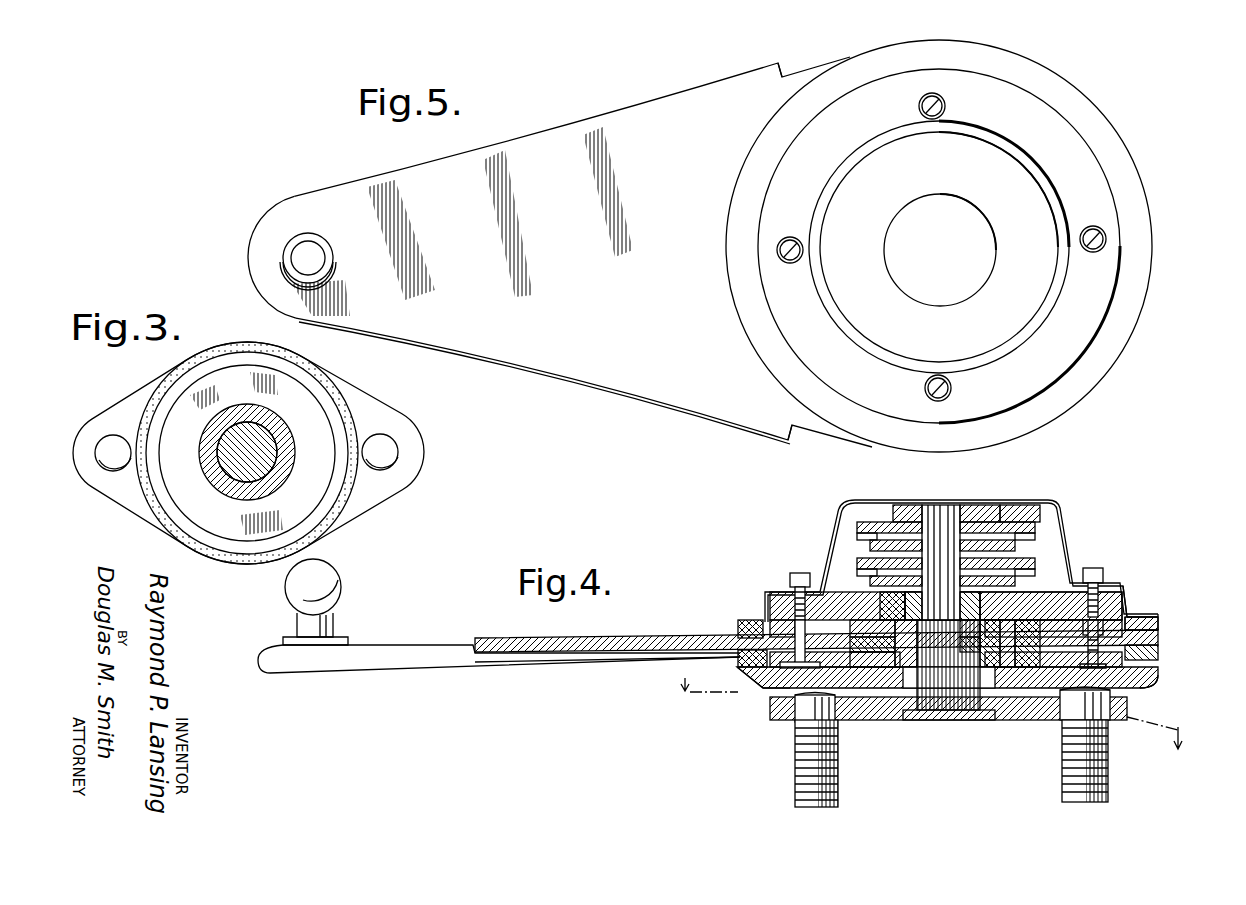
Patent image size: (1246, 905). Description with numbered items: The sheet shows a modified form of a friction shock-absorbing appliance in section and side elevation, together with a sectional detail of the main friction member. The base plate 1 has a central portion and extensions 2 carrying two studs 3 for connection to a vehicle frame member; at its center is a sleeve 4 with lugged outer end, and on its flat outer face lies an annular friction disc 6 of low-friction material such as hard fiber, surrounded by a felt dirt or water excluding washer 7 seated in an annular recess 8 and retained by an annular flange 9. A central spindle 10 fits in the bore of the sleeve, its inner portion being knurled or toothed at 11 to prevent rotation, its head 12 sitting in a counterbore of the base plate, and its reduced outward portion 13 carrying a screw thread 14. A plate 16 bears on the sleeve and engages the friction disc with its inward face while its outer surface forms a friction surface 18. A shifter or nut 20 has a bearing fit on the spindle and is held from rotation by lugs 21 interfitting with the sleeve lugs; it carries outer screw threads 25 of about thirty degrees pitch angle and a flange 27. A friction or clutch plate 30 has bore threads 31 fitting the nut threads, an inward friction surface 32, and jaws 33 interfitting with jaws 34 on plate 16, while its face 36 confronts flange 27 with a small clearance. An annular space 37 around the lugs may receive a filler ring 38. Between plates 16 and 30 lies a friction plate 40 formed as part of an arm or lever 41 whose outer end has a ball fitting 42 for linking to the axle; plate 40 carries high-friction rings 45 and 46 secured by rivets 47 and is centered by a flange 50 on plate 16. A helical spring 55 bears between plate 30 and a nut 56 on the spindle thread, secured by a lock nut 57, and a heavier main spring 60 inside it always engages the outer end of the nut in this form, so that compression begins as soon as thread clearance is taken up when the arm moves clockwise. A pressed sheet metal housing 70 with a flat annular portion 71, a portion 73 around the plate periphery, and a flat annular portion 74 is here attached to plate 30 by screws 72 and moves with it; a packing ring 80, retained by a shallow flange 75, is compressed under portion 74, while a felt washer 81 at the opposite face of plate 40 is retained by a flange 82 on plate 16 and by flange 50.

In FIG. 4, the base plate 1 is at (905, 720).
In FIG. 3, the extensions 2 is at (407, 441).
In FIG. 4, the extensions 2 is at (775, 722).
In FIG. 3, the studs 3 is at (388, 452).
In FIG. 4, the studs 3 is at (798, 740).
In FIG. 3, the sleeve 4 is at (217, 483).
In FIG. 4, the sleeve 4 is at (1008, 690).
In FIG. 3, the annular friction disc 6 is at (305, 408).
In FIG. 4, the annular friction disc 6 is at (872, 690).
In FIG. 3, the dirt or water excluding washer 7 is at (330, 408).
In FIG. 4, the dirt or water excluding washer 7 is at (1030, 690).
In FIG. 4, the annular recess 8 is at (858, 690).
In FIG. 3, the annular flange 9 is at (143, 423).
In FIG. 4, the annular flange 9 is at (1115, 722).
In FIG. 4, the central spindle 10 is at (953, 606).
In FIG. 3, the knurled or toothed portion 11 is at (250, 477).
In FIG. 4, the knurled or toothed portion 11 is at (940, 722).
In FIG. 4, the spindle head 12 is at (985, 722).
In FIG. 4, the reduced outward portion of spindle 13 is at (941, 562).
In FIG. 4, the screw thread 14 is at (990, 512).
In FIG. 4, the plate 16 is at (768, 690).
In FIG. 4, the friction surface 18 is at (760, 690).
In FIG. 4, the shifter or nut 20 is at (954, 624).
In FIG. 4, the nut lugs 21 is at (950, 640).
In FIG. 4, the screw threads 25 is at (925, 599).
In FIG. 4, the flange 27 is at (1090, 583).
In FIG. 4, the friction plate or clutch plate 30 is at (830, 592).
In FIG. 4, the screw threads 31 is at (1030, 596).
In FIG. 4, the friction surface 32 is at (770, 608).
In FIG. 4, the lugs or jaws 33 is at (871, 619).
In FIG. 4, the jaws 34 is at (835, 650).
In FIG. 4, the face of plate 30 36 is at (880, 600).
In FIG. 4, the annular space 37 is at (925, 722).
In FIG. 4, the filler ring 38 is at (1026, 650).
In FIG. 5, the friction plate 40 is at (820, 430).
In FIG. 4, the friction plate 40 is at (1158, 637).
In FIG. 5, the arm or lever 41 is at (560, 252).
In FIG. 4, the arm or lever 41 is at (548, 640).
In FIG. 5, the ball fitting 42 is at (306, 254).
In FIG. 4, the ball fitting 42 is at (330, 590).
In FIG. 4, the friction ring 45 is at (1140, 617).
In FIG. 4, the friction ring 46 is at (1135, 688).
In FIG. 4, the rivets 47 is at (1158, 622).
In FIG. 4, the flange 50 is at (1152, 678).
In FIG. 4, the spring 55 is at (1035, 555).
In FIG. 4, the nut 56 is at (870, 520).
In FIG. 4, the lock nut 57 is at (912, 508).
In FIG. 4, the main spring 60 is at (1042, 520).
In FIG. 5, the housing or cover 70 is at (964, 272).
In FIG. 4, the housing or cover 70 is at (1003, 497).
In FIG. 5, the flat annular portion of housing 71 is at (1098, 318).
In FIG. 4, the flat annular portion of housing 71 is at (1122, 590).
In FIG. 5, the screws 72 is at (803, 237).
In FIG. 4, the screws 72 is at (793, 574).
In FIG. 4, the housing portion surrounding plate periphery 73 is at (1135, 617).
In FIG. 5, the flat annular housing portion 74 is at (1140, 283).
In FIG. 4, the flat annular housing portion 74 is at (1158, 618).
In FIG. 4, the shallow flange 75 is at (1158, 627).
In FIG. 4, the packing ring 80 is at (729, 624).
In FIG. 4, the washer 81 is at (731, 667).
In FIG. 4, the flange 82 is at (1160, 652).